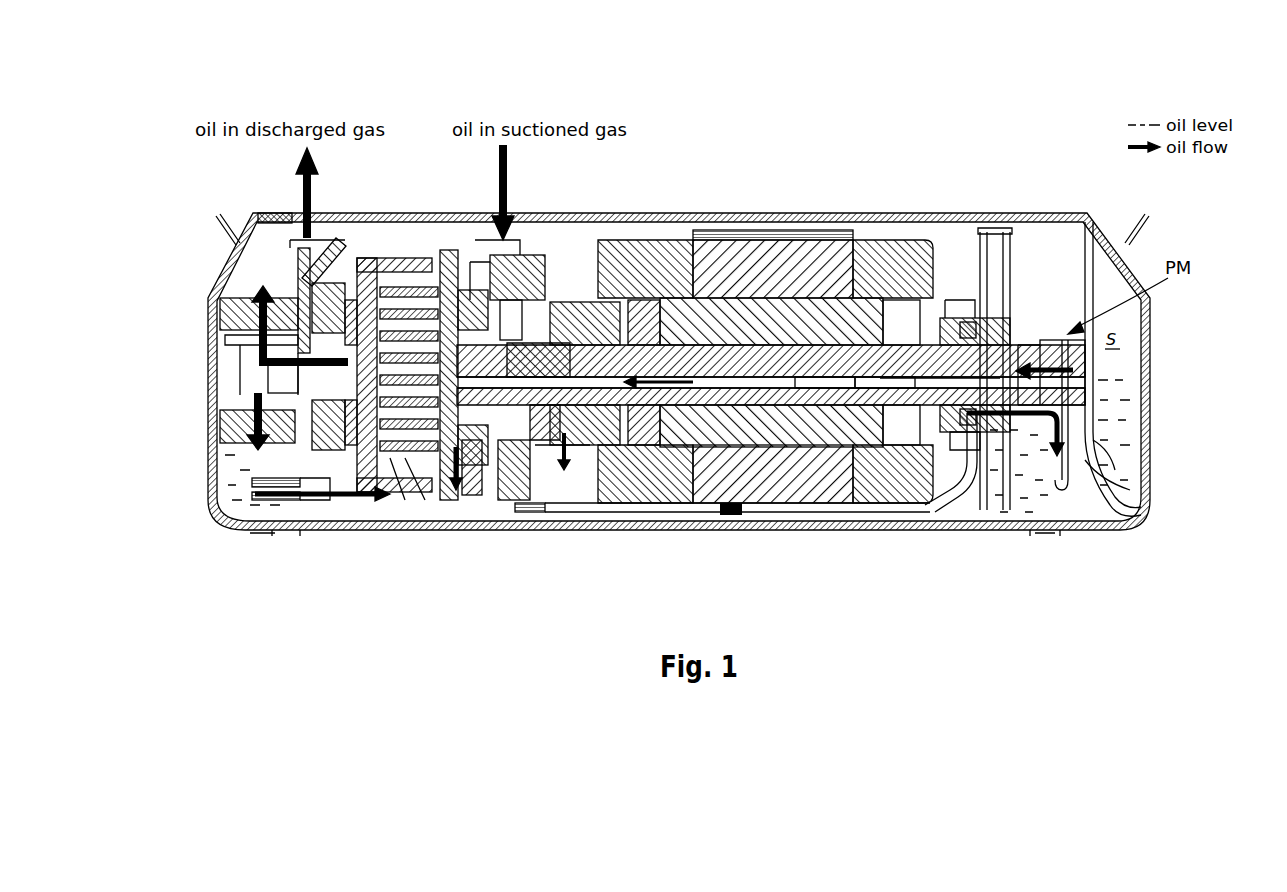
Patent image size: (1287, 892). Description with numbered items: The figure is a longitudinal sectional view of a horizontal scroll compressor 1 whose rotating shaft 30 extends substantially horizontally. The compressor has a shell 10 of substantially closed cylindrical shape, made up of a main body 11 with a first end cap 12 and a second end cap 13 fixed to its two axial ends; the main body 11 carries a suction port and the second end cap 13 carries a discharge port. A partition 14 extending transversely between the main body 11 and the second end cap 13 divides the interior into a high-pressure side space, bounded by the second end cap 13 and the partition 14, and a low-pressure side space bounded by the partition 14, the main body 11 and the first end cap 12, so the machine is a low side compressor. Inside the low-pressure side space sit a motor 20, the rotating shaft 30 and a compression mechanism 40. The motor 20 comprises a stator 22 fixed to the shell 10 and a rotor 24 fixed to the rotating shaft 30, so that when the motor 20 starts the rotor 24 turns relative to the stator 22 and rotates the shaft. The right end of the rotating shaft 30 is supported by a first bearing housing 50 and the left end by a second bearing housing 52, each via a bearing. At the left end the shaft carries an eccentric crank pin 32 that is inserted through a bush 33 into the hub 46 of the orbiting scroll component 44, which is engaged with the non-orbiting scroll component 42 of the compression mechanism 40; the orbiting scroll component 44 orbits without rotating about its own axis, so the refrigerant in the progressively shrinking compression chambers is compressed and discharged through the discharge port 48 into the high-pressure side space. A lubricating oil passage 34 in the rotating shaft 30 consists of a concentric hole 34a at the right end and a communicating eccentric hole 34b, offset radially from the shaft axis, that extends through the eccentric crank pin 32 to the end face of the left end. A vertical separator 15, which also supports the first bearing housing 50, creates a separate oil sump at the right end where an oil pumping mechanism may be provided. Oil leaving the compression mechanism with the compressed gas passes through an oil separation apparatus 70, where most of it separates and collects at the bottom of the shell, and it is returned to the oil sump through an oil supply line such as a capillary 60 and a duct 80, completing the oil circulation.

The horizontal scroll compressor 1 is at (1092, 83).
The shell 10 is at (578, 222).
The main body 11 is at (772, 232).
The first end cap 12 is at (1086, 215).
The second end cap 13 is at (284, 213).
The partition 14 is at (318, 245).
The vertical separator 15 is at (975, 515).
The motor 20 is at (662, 262).
The stator 22 is at (760, 490).
The rotor 24 is at (837, 480).
The rotating shaft 30 is at (646, 493).
The eccentric crank pin 32 is at (535, 500).
The bush 33 is at (478, 500).
The lubricating oil passage 34 is at (910, 170).
The concentric hole 34a is at (897, 395).
The eccentric hole 34b is at (810, 388).
The compression mechanism 40 is at (422, 240).
The non-orbiting scroll component 42 is at (405, 500).
The orbiting scroll component 44 is at (456, 500).
The hub 46 is at (470, 280).
The discharge port 48 is at (267, 378).
The first bearing housing 50 is at (945, 318).
The second bearing housing 52 is at (525, 240).
The capillary 60 is at (292, 496).
The oil separation apparatus 70 is at (217, 420).
The duct 80 is at (890, 512).